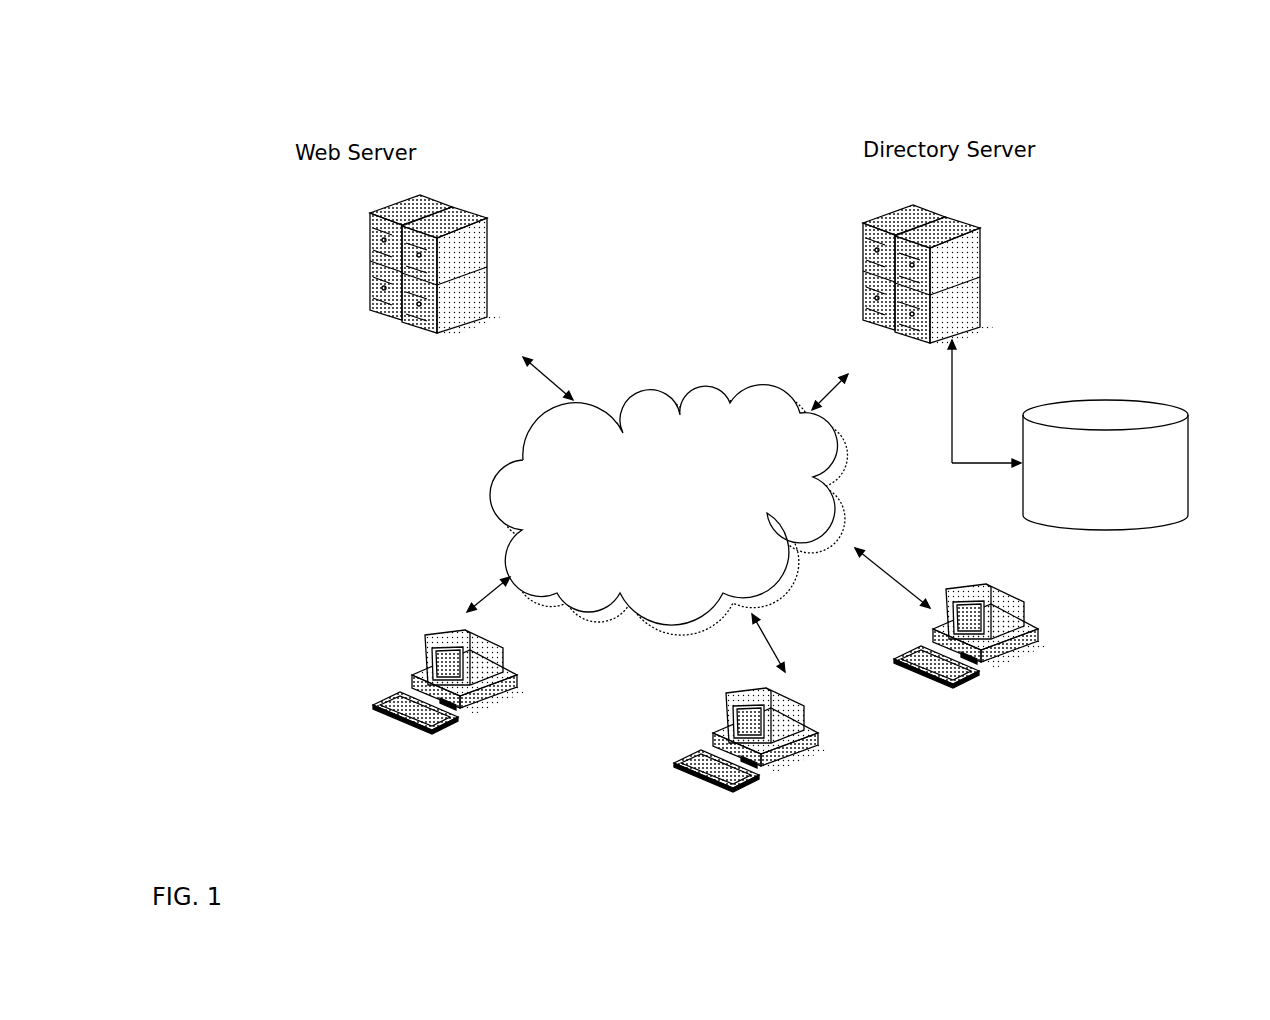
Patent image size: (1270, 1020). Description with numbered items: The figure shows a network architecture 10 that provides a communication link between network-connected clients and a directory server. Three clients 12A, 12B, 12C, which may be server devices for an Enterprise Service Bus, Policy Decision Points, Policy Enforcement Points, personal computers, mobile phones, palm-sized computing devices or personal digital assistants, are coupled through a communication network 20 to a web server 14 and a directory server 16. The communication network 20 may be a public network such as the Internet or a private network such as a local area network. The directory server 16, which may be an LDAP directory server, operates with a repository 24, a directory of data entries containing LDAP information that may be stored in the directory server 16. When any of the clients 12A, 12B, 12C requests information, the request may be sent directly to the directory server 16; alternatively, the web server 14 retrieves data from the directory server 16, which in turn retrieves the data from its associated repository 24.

The network architecture 10 is at (538, 86).
The client 12A is at (401, 725).
The client 12B is at (802, 767).
The client 12C is at (1030, 665).
The web server 14 is at (442, 200).
The directory server 16 is at (935, 210).
The communication network 20 is at (647, 548).
The repository 24 is at (1188, 462).